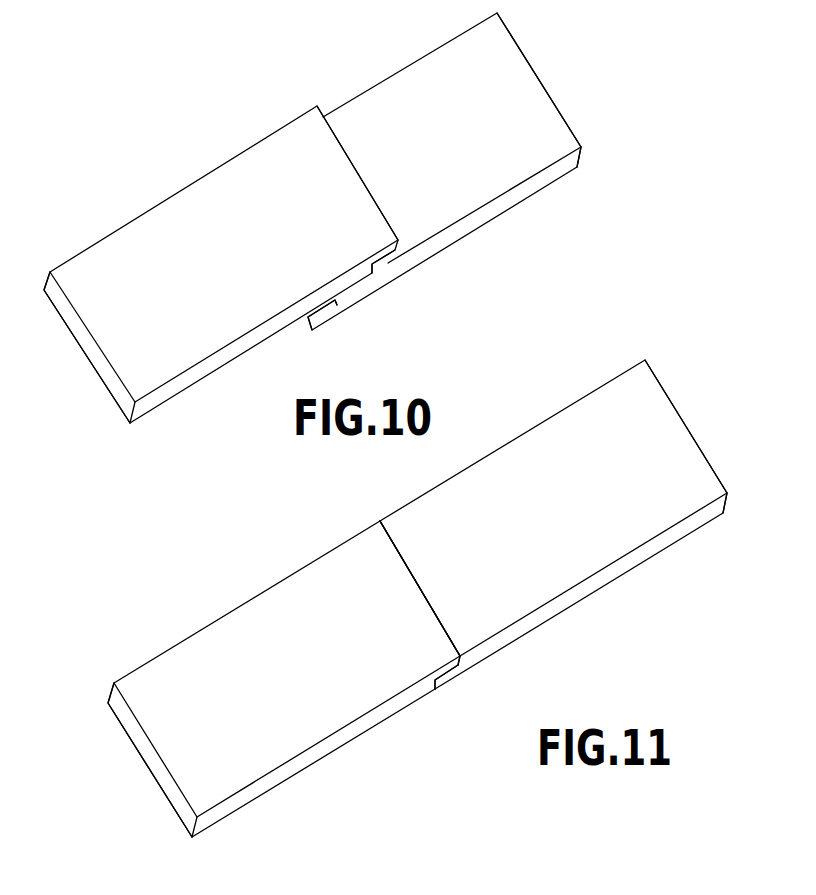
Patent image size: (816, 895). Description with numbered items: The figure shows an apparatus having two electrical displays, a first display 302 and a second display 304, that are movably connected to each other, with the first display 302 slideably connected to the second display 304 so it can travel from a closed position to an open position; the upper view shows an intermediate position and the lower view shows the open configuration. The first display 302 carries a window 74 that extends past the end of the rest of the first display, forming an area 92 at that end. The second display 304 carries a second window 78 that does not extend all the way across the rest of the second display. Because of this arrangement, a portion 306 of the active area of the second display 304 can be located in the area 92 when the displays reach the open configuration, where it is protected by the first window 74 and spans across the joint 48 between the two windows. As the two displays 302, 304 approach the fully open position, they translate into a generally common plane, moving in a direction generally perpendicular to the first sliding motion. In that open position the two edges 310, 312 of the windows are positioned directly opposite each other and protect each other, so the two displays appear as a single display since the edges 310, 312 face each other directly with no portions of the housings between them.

In FIG. 10, the window 74 is at (135, 250).
In FIG. 11, the window 74 is at (237, 637).
In FIG. 10, the second window 78 is at (504, 57).
In FIG. 11, the second window 78 is at (648, 405).
In FIG. 10, the first display 302 is at (65, 312).
In FIG. 11, the first display 302 is at (158, 668).
In FIG. 10, the second display 304 is at (563, 115).
In FIG. 11, the second display 304 is at (700, 443).
In FIG. 10, the edge 310 is at (352, 168).
In FIG. 11, the edge 310 is at (392, 547).
In FIG. 10, the area 92 is at (387, 263).
In FIG. 11, the area 92 is at (445, 680).
In FIG. 10, the portion of the second display active area 306 is at (323, 320).
In FIG. 11, the portion of the second display active area 306 is at (457, 675).
In FIG. 11, the joint 48 is at (415, 573).
In FIG. 11, the edge 312 is at (437, 617).